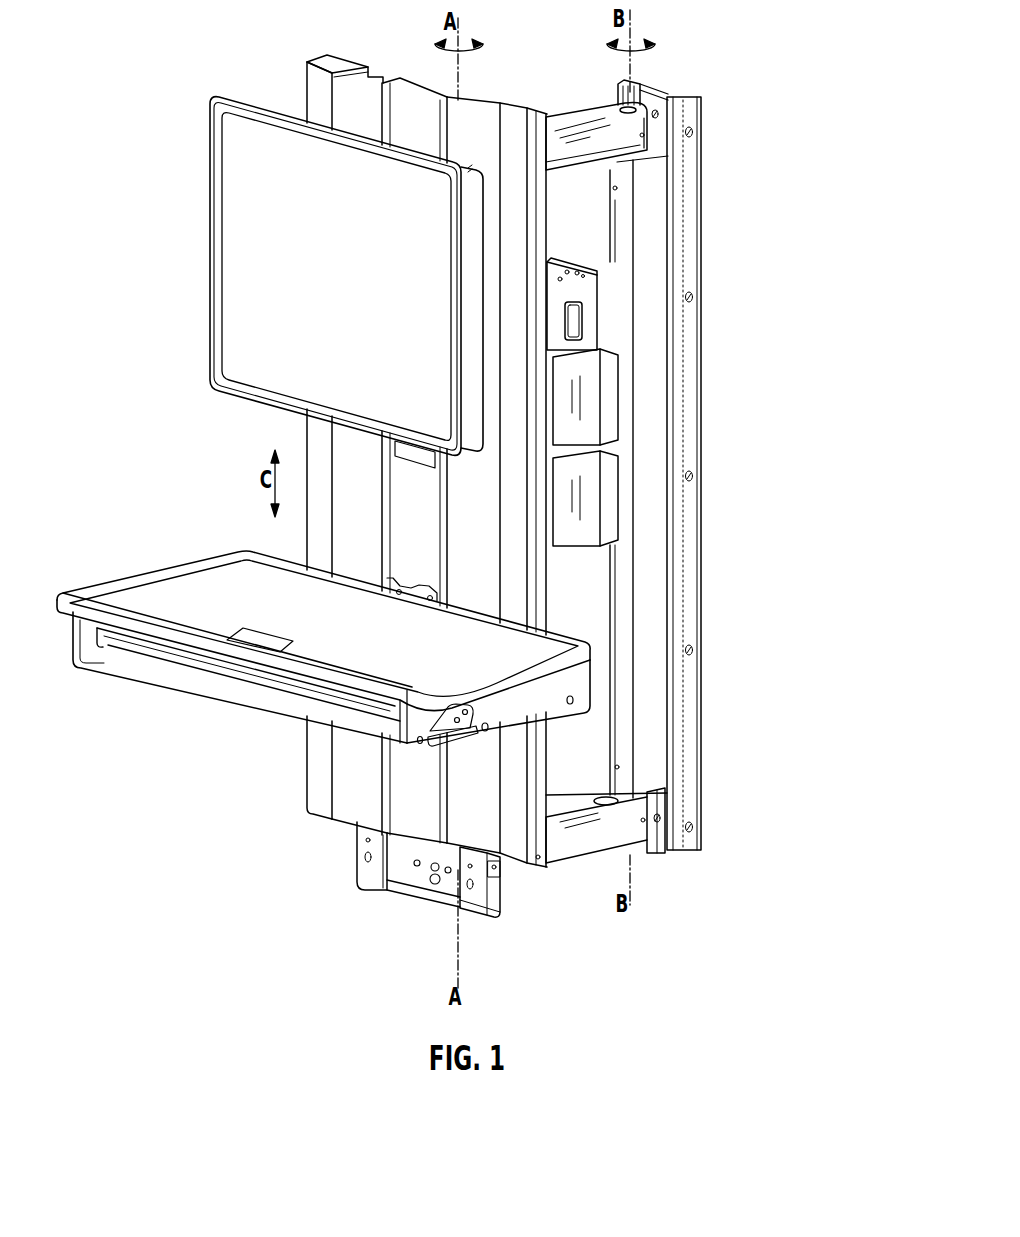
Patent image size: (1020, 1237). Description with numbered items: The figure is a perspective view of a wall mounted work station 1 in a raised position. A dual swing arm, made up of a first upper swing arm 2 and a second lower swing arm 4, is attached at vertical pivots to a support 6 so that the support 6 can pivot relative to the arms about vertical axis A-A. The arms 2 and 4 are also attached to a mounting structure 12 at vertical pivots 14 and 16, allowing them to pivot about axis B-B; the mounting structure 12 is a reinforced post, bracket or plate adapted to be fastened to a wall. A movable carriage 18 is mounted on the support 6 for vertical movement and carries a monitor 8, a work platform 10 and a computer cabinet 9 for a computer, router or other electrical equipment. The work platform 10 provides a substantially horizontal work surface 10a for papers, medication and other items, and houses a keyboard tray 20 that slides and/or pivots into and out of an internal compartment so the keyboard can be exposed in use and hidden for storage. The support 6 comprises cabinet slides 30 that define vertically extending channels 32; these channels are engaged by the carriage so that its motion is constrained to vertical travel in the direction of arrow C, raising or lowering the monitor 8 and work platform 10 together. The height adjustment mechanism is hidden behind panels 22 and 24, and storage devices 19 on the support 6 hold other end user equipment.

The work station 1 is at (798, 218).
The first upper swing arm 2 is at (560, 118).
The second lower swing arm 4 is at (583, 860).
The support 6 is at (470, 897).
The monitor 8 is at (235, 207).
The computer cabinet 9 is at (565, 270).
The work platform 10 is at (132, 536).
The work surface 10a is at (222, 583).
The mounting structure 12 is at (701, 451).
The vertical pivot 14 is at (642, 98).
The vertical pivot 16 is at (643, 843).
The movable carriage 18 is at (282, 851).
The storage devices 19 is at (617, 495).
The keyboard tray 20 is at (172, 678).
The panel 22 is at (355, 808).
The panel 24 is at (430, 523).
The cabinet slides 30 is at (462, 903).
The vertically extending channels 32 is at (372, 73).